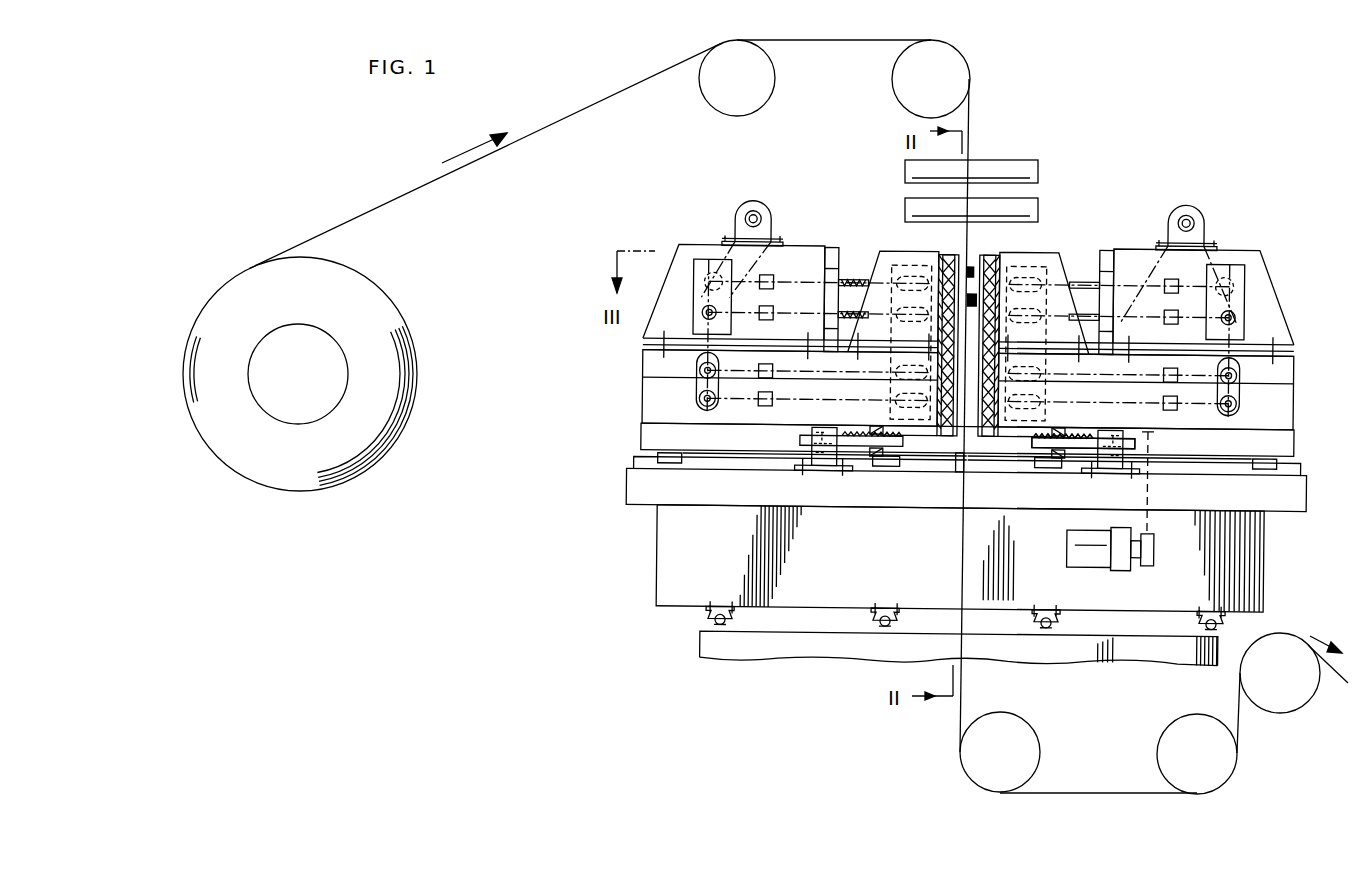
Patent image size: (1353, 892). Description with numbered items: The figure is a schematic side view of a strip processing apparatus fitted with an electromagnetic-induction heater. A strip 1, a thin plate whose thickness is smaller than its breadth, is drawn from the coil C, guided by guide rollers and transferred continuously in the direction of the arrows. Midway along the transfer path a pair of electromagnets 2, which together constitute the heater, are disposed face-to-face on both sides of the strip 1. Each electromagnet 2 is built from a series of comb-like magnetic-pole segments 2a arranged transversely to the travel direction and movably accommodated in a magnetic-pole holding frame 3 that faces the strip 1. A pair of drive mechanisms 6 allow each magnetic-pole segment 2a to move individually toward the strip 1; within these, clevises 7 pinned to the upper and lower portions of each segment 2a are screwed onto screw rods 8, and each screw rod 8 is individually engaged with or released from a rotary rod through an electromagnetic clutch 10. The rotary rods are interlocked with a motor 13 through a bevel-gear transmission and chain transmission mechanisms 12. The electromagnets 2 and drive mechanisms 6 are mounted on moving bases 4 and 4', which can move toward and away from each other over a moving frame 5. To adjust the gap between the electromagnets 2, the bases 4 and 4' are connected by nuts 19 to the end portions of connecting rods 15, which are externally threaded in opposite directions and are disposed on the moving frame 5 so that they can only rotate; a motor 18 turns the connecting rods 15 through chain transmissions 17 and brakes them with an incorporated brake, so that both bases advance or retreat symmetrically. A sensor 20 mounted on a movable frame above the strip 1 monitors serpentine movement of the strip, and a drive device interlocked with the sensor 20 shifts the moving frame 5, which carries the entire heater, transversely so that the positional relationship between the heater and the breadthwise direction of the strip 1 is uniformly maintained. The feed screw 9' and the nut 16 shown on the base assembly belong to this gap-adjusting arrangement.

The strip 1 is at (975, 106).
The electromagnet 2 is at (958, 259).
The magnetic-pole segment 2a is at (890, 265).
The magnetic-pole holding frame 3 is at (916, 253).
The moving base 4 is at (760, 387).
The moving base 4' is at (1171, 391).
The moving frame 5 is at (663, 552).
The drive mechanism 6 is at (780, 220).
The clevis 7 is at (905, 313).
The screw rod 8 is at (852, 279).
The feed screw 9' is at (1077, 472).
The electromagnetic clutch 10 is at (772, 279).
The chain transmission mechanism 12 is at (712, 276).
The motor 13 is at (740, 221).
The connecting rod 15 is at (958, 458).
The nut 16 is at (824, 467).
The chain transmission 17 is at (1150, 462).
The motor 18 is at (1094, 567).
The nut 19 is at (874, 467).
The sensor 20 is at (1023, 166).
The coil C is at (365, 306).